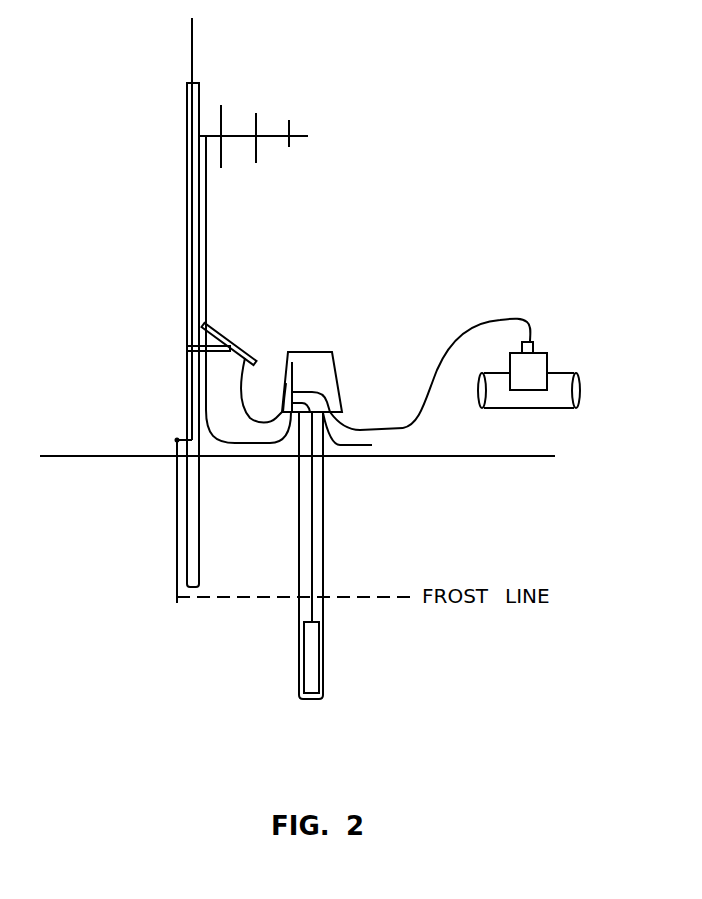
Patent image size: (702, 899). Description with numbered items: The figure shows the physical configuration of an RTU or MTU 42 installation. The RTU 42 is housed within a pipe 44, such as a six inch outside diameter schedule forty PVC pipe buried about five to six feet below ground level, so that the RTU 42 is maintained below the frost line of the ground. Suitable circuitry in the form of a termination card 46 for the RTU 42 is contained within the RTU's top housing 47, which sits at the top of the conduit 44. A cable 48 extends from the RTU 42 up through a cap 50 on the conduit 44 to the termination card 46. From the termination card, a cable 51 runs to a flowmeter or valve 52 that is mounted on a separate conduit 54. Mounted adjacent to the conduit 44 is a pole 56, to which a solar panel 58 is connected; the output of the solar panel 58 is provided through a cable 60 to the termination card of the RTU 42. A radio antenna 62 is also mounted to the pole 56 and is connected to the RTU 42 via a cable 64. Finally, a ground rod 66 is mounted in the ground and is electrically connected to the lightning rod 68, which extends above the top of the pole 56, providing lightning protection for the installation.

The RTU or MTU 42 is at (318, 663).
The pipe 44 is at (325, 548).
The termination card 46 is at (293, 367).
The top housing 47 is at (343, 390).
The cable 48 is at (312, 503).
The cap 50 is at (372, 445).
The cable 51 is at (482, 328).
The flowmeter or valve 52 is at (547, 358).
The conduit 54 is at (542, 410).
The pole 56 is at (187, 287).
The solar panel 58 is at (225, 333).
The cable 60 is at (258, 428).
The radio antenna 62 is at (298, 132).
The cable 64 is at (274, 448).
The ground rod 66 is at (177, 475).
The lightning rod 68 is at (192, 50).